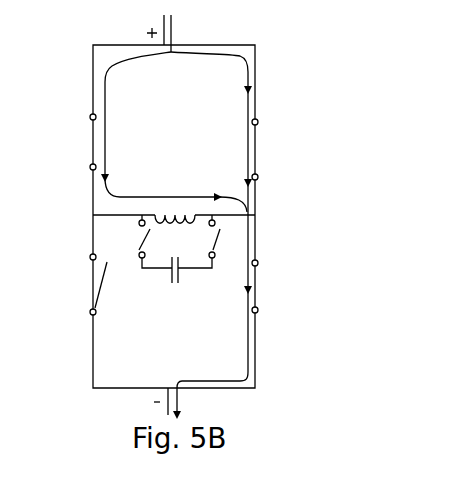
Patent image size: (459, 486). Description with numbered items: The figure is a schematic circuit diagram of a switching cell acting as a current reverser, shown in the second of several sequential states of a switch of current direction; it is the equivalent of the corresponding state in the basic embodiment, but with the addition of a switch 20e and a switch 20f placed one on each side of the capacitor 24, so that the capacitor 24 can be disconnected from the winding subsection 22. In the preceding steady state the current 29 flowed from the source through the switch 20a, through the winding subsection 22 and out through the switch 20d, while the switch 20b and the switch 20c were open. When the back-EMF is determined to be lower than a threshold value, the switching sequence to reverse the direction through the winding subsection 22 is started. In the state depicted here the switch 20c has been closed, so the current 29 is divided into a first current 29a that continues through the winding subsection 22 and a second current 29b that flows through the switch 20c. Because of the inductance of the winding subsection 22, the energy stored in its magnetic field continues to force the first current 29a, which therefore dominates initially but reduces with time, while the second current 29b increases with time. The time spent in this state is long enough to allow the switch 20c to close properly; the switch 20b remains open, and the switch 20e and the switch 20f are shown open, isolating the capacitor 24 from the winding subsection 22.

The current 29 is at (176, 31).
The first current 29a is at (92, 102).
The second current 29b is at (248, 135).
The switch 20a is at (90, 166).
The switch 20b is at (90, 311).
The switch 20c is at (258, 177).
The switch 20d is at (280, 304).
The switch 20e is at (140, 254).
The switch 20f is at (215, 255).
The winding subsection 22 is at (173, 212).
The capacitor 24 is at (181, 270).